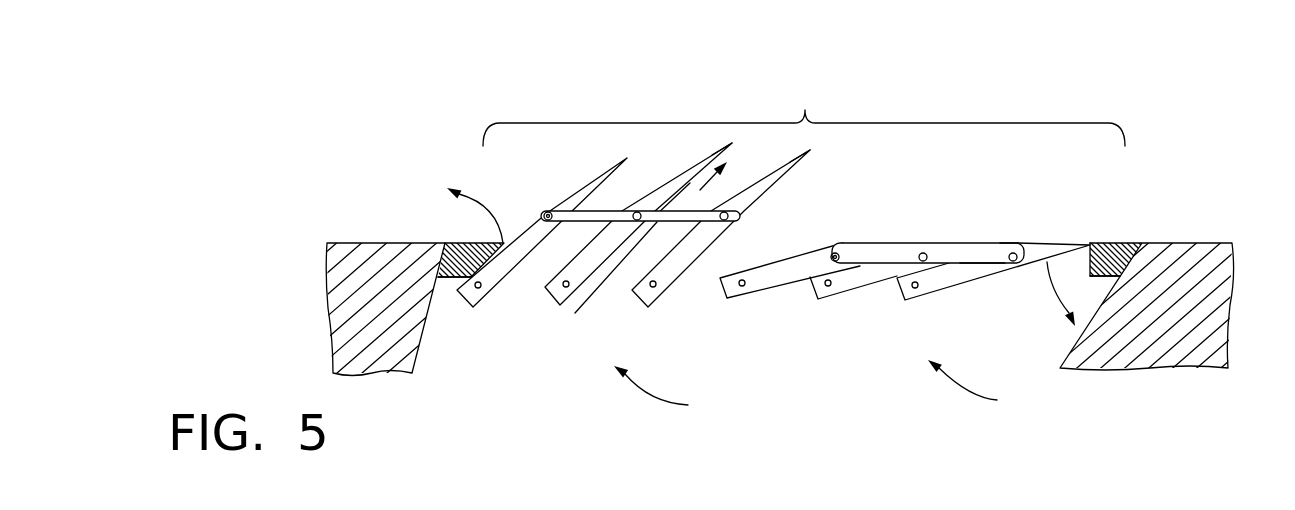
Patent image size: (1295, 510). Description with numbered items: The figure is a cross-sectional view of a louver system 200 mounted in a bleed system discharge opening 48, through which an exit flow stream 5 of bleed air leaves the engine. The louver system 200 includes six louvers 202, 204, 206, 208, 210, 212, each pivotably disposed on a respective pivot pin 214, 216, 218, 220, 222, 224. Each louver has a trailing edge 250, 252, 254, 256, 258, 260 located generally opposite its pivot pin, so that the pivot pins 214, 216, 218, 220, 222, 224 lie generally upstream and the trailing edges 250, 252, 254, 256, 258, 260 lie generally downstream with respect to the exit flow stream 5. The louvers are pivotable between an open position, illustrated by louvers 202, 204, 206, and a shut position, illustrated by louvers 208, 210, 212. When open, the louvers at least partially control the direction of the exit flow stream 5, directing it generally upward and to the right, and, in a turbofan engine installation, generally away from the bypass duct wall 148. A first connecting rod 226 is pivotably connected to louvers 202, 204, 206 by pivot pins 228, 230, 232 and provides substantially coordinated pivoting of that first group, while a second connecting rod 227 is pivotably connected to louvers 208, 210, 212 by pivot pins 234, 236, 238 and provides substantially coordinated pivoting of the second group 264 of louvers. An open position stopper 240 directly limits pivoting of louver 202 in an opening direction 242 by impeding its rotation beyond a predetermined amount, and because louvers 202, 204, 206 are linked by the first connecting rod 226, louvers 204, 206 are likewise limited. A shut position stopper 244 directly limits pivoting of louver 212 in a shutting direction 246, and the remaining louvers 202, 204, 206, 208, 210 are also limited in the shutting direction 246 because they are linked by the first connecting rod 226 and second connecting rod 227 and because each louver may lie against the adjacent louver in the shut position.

The exit flow stream 5 is at (597, 297).
The bleed system discharge opening 48 is at (806, 110).
The bypass duct wall 148 is at (1183, 250).
The louver system 200 is at (420, 184).
The louver 202 is at (520, 248).
The louver 204 is at (550, 284).
The louver 206 is at (673, 263).
The louver 208 is at (757, 280).
The louver 210 is at (842, 282).
The louver 212 is at (930, 281).
The pivot pin 214 is at (477, 292).
The pivot pin 216 is at (566, 288).
The pivot pin 218 is at (652, 288).
The pivot pin 220 is at (740, 287).
The pivot pin 222 is at (828, 287).
The pivot pin 224 is at (914, 289).
The first connecting rod 226 is at (668, 213).
The second connecting rod 227 is at (987, 257).
The pivot pin 228 is at (548, 211).
The pivot pin 230 is at (637, 211).
The pivot pin 232 is at (724, 221).
The pivot pin 234 is at (835, 253).
The pivot pin 236 is at (926, 253).
The pivot pin 238 is at (1015, 254).
The open position stopper 240 is at (445, 277).
The opening direction 242 is at (492, 212).
The shut position stopper 244 is at (1107, 278).
The shutting direction 246 is at (1058, 287).
The trailing edge 250 is at (627, 158).
The trailing edge 252 is at (732, 143).
The trailing edge 254 is at (810, 150).
The trailing edge 256 is at (933, 243).
The trailing edge 258 is at (1018, 243).
The trailing edge 260 is at (1090, 245).
The second group of louvers 264 is at (989, 388).